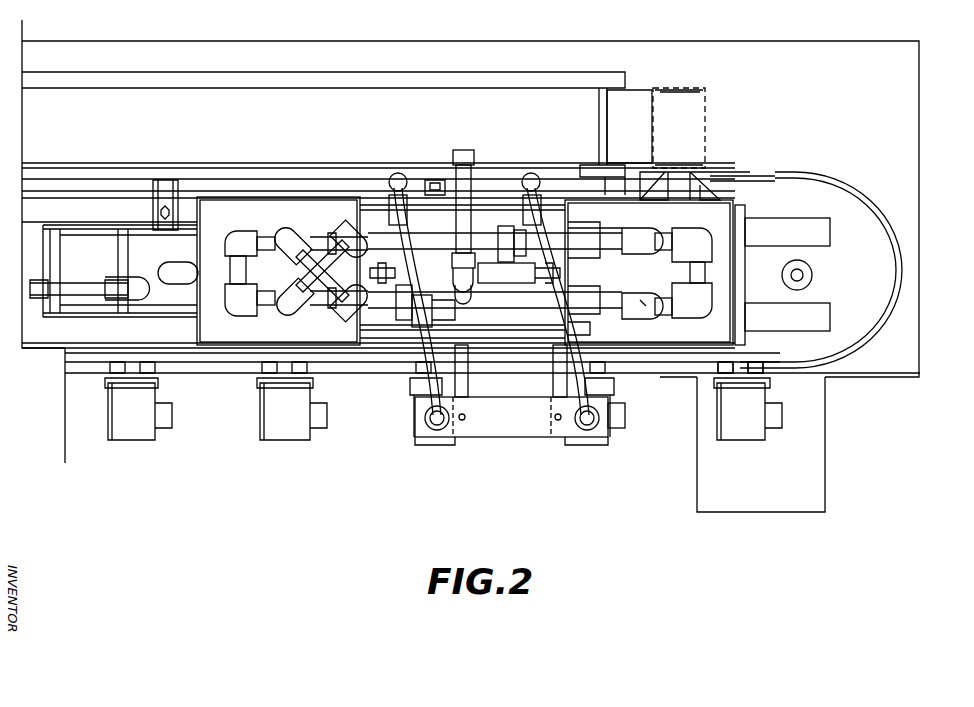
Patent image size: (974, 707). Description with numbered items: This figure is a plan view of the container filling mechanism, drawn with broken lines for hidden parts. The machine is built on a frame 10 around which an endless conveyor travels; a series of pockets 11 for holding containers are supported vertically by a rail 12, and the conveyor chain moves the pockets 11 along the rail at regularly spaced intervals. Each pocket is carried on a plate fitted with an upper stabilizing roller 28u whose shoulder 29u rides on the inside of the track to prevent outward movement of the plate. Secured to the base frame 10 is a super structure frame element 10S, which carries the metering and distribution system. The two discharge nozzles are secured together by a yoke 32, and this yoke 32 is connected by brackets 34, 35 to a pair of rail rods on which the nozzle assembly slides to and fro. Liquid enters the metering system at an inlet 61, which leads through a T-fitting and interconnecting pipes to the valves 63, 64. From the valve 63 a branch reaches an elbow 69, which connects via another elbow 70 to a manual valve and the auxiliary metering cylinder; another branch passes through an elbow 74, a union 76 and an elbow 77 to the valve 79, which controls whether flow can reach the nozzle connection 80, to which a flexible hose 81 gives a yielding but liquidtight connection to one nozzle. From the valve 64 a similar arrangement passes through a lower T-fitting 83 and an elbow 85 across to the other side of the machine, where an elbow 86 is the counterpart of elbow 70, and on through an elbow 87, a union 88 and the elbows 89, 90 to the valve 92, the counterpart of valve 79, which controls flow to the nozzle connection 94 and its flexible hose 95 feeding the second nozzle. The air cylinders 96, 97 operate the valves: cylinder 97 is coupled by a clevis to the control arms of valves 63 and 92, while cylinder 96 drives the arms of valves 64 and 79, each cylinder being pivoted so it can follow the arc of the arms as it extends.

The frame 10 is at (905, 127).
The super structure frame element 10S is at (677, 186).
The pockets 11 is at (136, 432).
The rail 12 is at (868, 341).
The upper stabilizing roller 28u is at (758, 369).
The shoulder 29u is at (760, 358).
The yoke 32 is at (512, 432).
The bracket 34 is at (560, 382).
The bracket 35 is at (468, 387).
The inlet 61 is at (473, 157).
The valve 63 is at (334, 318).
The valve 64 is at (598, 292).
The elbow 69 is at (231, 308).
The elbow 70 is at (237, 232).
The elbow 74 is at (350, 233).
The union 76 is at (511, 216).
The elbow 77 is at (628, 246).
The valve 79 is at (597, 226).
The nozzle connection 80 is at (532, 170).
The flexible hose 81 is at (592, 338).
The lower T-fitting 83 is at (655, 312).
The elbow 85 is at (699, 313).
The elbow 86 is at (700, 236).
The elbow 87 is at (643, 302).
The union 88 is at (420, 326).
The elbow 89 is at (352, 310).
The elbow 90 is at (290, 236).
The valve 92 is at (343, 222).
The nozzle connection 94 is at (398, 177).
The flexible hose 95 is at (428, 410).
The air cylinder 96 is at (519, 273).
The air cylinder 97 is at (413, 310).